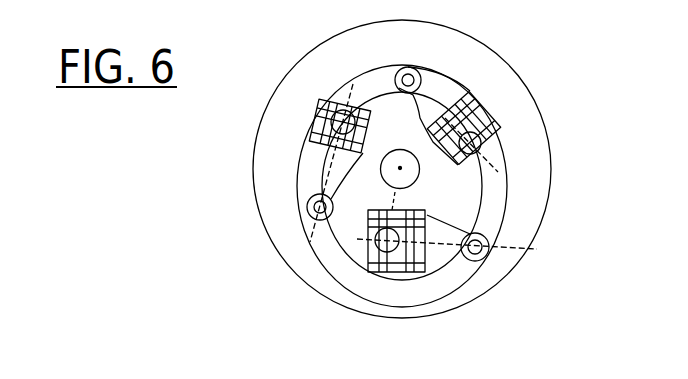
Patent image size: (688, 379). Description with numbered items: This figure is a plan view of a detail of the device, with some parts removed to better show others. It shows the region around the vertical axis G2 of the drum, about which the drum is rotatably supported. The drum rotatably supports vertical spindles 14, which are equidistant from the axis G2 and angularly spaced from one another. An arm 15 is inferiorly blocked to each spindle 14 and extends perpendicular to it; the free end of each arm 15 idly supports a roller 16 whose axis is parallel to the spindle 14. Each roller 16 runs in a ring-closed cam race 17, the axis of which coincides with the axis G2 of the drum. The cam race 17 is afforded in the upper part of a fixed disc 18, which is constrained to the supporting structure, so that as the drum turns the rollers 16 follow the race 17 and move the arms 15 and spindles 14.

The vertical spindle 14 is at (502, 153).
The arm 15 is at (437, 92).
The roller 16 is at (416, 72).
The ring-closed cam race 17 is at (492, 203).
The fixed disc 18 is at (492, 275).
The vertical axis of the drum G2 is at (400, 168).